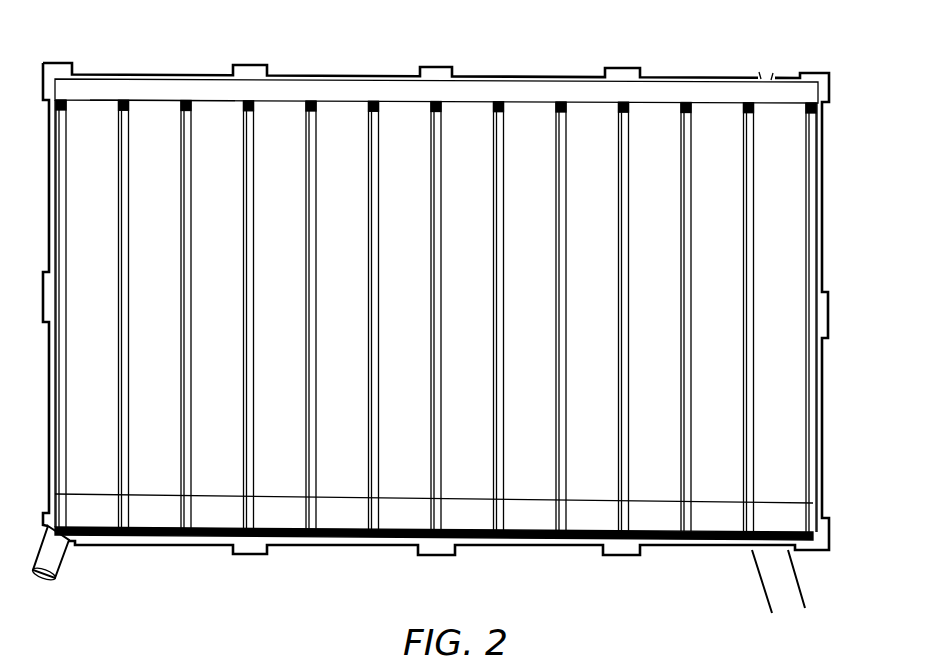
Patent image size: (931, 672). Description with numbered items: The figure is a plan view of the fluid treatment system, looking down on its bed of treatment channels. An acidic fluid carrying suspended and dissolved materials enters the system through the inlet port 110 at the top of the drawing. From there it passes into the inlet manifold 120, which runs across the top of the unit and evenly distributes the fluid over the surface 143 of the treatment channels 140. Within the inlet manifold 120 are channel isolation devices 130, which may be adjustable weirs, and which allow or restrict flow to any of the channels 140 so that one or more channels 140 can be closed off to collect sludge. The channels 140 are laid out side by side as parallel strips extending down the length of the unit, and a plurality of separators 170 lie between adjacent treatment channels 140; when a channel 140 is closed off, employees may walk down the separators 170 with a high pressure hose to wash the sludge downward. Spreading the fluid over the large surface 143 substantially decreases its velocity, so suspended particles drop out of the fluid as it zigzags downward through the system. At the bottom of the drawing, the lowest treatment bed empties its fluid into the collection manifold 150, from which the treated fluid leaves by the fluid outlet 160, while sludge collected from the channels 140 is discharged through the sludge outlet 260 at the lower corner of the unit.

The inlet port 110 is at (771, 80).
The inlet manifold 120 is at (330, 92).
The channel isolation devices 130 is at (222, 100).
The channel surface 143 is at (436, 323).
The separators 170 is at (252, 472).
The treatment channels 140 is at (408, 473).
The collection manifold 150 is at (583, 515).
The fluid outlet 160 is at (787, 597).
The sludge outlet 260 is at (57, 560).